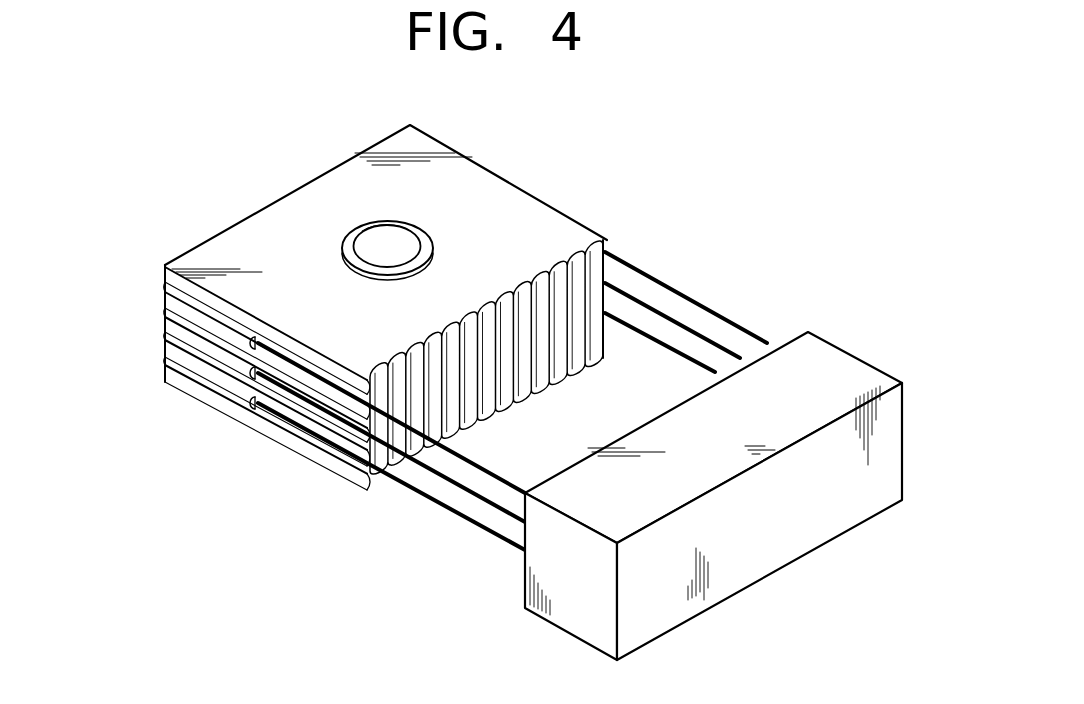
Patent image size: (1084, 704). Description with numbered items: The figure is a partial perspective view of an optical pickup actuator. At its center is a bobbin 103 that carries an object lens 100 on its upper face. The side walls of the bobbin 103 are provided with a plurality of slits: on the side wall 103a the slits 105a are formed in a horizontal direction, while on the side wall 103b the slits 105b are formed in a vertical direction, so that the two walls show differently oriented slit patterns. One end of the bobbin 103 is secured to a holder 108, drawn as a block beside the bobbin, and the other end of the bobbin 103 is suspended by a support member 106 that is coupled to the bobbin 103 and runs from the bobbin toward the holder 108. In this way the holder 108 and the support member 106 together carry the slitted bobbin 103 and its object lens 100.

The object lens 100 is at (372, 235).
The bobbin 103 is at (158, 254).
The side wall 103a is at (170, 352).
The side wall 103b is at (603, 248).
The slits 105a is at (197, 382).
The slits 105b is at (578, 253).
The support member 106 is at (440, 508).
The holder 108 is at (840, 362).